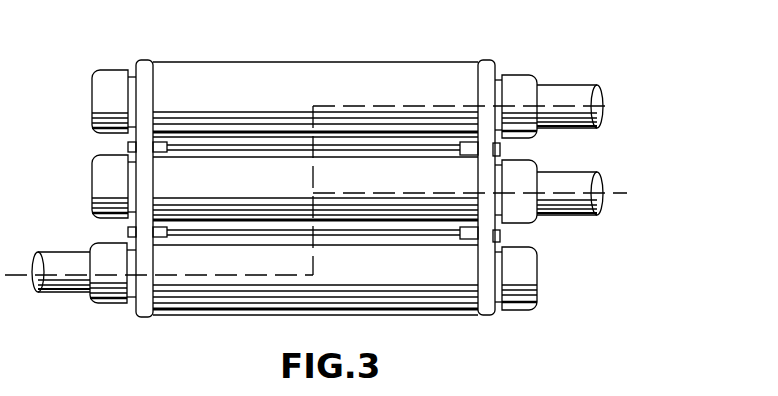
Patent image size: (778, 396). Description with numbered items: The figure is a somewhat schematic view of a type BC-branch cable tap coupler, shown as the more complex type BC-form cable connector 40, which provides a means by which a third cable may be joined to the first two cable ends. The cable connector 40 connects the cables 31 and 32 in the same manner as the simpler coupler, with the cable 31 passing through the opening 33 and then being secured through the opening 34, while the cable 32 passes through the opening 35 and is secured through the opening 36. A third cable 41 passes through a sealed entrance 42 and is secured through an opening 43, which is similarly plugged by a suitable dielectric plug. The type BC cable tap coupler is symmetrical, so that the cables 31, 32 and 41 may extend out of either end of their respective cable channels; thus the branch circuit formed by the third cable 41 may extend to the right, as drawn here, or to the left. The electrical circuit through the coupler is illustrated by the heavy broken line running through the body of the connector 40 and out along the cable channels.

The type BC-form cable connector 40 is at (390, 60).
The opening 43 is at (113, 70).
The opening 36 is at (92, 190).
The opening 33 is at (117, 305).
The sealed entrance 42 is at (524, 75).
The opening 35 is at (537, 163).
The opening 34 is at (537, 278).
The third cable 41 is at (578, 85).
The cable 32 is at (575, 216).
The cable 31 is at (73, 294).